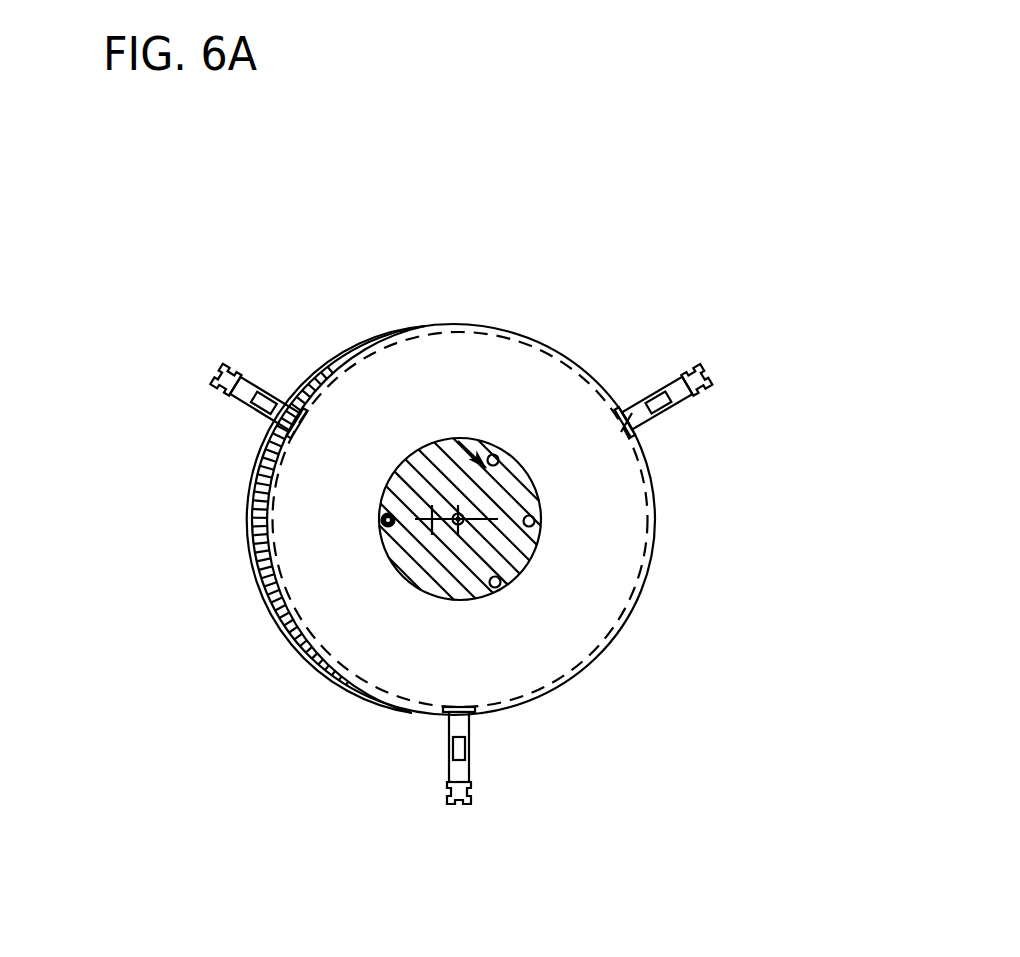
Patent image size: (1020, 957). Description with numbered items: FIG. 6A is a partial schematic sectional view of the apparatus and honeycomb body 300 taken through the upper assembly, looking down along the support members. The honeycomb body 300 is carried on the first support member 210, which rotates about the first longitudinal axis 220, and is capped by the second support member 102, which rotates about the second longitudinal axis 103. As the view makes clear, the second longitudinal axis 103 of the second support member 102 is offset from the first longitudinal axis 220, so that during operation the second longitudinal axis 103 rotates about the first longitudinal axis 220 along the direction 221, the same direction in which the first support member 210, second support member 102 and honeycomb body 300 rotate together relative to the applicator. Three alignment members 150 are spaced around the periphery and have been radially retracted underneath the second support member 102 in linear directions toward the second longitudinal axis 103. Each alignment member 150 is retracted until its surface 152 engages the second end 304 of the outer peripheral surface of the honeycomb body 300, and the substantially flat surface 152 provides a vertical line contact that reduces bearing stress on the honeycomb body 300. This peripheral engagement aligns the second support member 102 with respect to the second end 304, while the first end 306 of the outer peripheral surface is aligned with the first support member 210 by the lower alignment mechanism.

The second support member 102 is at (455, 470).
The second longitudinal axis 103 is at (458, 524).
The alignment members 150 is at (680, 412).
The surface 152 is at (618, 432).
The first support member 210 is at (246, 521).
The first longitudinal axis 220 is at (422, 522).
The direction 221 is at (386, 464).
The honeycomb body 300 is at (275, 519).
The second end 304 is at (655, 511).
The first end 306 is at (258, 490).